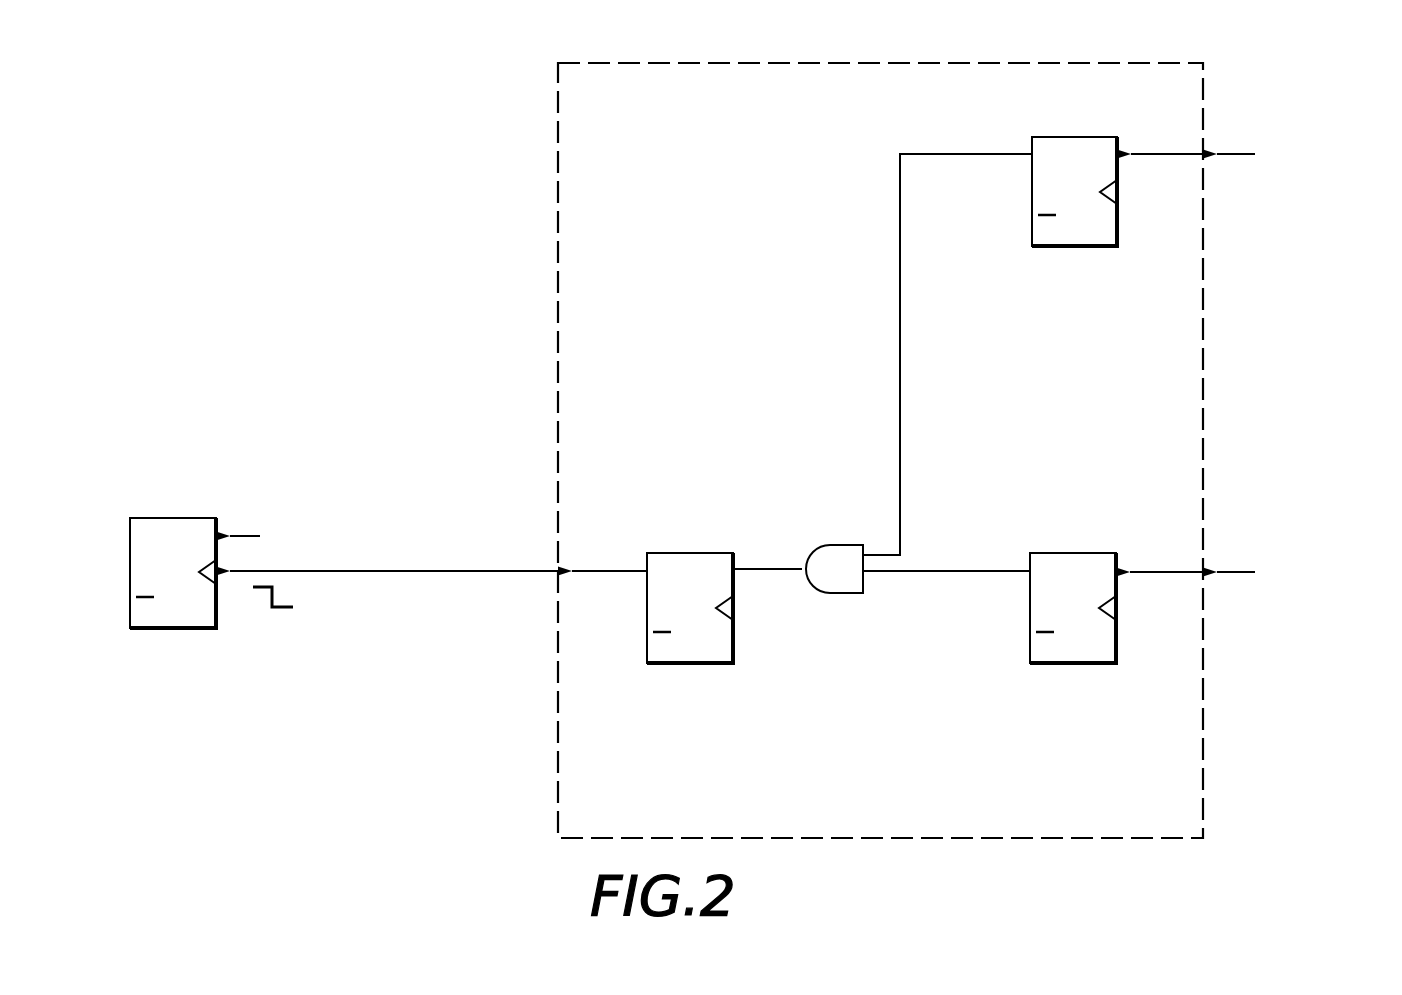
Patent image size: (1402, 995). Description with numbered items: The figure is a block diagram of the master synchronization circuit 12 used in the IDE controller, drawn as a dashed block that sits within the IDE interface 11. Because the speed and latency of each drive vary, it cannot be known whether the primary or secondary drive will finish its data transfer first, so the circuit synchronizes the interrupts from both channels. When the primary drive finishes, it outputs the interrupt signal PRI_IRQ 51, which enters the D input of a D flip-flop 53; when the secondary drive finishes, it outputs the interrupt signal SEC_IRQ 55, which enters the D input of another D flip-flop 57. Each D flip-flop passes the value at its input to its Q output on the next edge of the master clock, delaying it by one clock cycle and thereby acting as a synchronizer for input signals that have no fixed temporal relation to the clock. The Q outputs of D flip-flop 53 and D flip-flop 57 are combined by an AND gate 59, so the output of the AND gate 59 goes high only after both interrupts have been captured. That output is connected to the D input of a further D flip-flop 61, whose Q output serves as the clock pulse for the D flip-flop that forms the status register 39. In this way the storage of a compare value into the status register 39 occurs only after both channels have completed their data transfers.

The IDE interface 11 is at (279, 220).
The master synchronization circuit 12 is at (655, 62).
The status register 39 is at (165, 517).
The PRI_IRQ interrupt signal 51 is at (1312, 115).
The D flip-flop 53 is at (1073, 137).
The SEC_IRQ interrupt signal 55 is at (1324, 535).
The D flip-flop 57 is at (1067, 553).
The AND gate 59 is at (830, 545).
The D flip-flop 61 is at (688, 553).